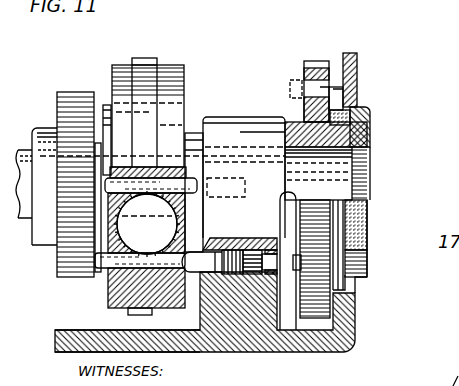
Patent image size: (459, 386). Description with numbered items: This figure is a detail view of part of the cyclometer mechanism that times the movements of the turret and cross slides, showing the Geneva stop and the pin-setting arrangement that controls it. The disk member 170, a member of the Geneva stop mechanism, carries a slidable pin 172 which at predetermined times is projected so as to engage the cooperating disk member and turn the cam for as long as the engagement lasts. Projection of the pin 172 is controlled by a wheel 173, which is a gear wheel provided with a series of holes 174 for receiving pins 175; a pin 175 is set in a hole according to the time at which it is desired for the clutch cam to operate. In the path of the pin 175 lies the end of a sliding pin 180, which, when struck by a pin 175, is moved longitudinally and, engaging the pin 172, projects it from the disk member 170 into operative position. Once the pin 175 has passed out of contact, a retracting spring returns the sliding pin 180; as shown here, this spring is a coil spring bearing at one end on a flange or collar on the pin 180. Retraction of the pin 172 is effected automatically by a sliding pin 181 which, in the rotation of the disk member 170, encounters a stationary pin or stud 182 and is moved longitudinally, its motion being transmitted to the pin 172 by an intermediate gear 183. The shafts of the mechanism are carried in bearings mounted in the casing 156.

The disk member 170 is at (146, 58).
The sliding pin 181 is at (153, 178).
The stationary pin or stud 182 is at (215, 178).
The intermediate gear 183 is at (147, 224).
The slidable pin 172 is at (108, 288).
The casing 156 is at (102, 347).
The sliding pin 180 is at (205, 327).
The pin 175 is at (293, 330).
The wheel 173 is at (387, 325).
The holes 174 is at (343, 86).